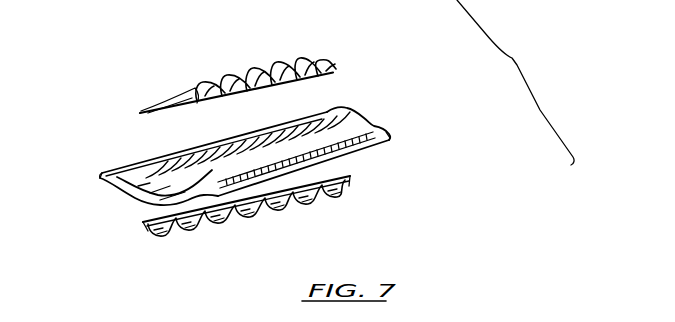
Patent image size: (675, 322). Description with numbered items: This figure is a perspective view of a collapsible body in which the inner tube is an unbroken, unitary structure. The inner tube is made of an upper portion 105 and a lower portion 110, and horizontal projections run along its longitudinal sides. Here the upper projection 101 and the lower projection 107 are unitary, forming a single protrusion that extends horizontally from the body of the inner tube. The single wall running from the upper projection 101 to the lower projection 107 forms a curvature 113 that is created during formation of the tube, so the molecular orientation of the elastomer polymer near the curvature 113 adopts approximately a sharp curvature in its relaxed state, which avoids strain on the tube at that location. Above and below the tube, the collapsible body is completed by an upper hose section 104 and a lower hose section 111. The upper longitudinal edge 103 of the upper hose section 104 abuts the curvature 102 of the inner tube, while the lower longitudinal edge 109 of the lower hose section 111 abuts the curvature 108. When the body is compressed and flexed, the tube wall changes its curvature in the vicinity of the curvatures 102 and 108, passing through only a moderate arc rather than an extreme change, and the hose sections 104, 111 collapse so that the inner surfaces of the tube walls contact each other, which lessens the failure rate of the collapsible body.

The upper projection 101 is at (110, 166).
The curvature 102 is at (377, 117).
The upper longitudinal edge 103 is at (145, 105).
The upper hose section 104 is at (223, 72).
The upper portion of inner tube 105 is at (160, 162).
The lower projection 107 is at (110, 187).
The curvature 108 is at (115, 190).
The lower portion of inner tube 110 is at (147, 205).
The lower longitudinal edge 109 is at (143, 230).
The lower hose section 111 is at (238, 230).
The curvature 113 is at (100, 180).